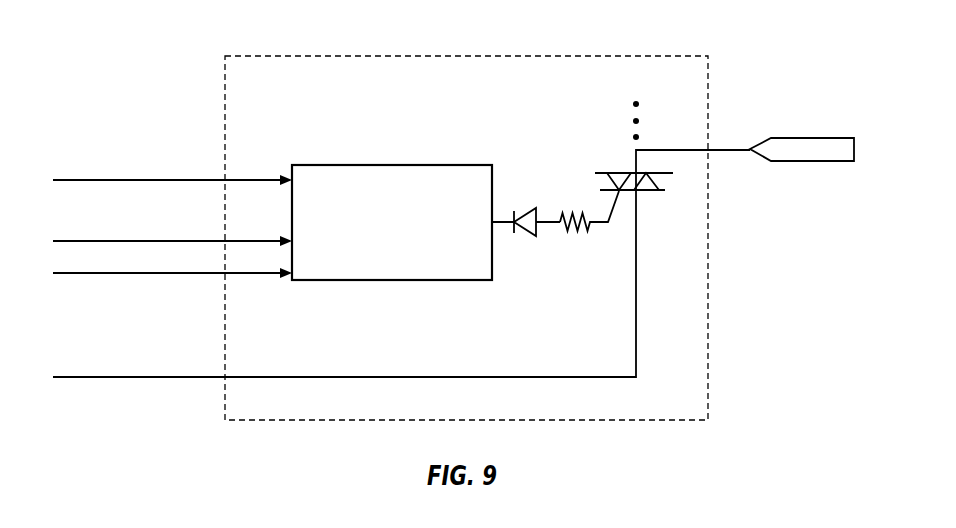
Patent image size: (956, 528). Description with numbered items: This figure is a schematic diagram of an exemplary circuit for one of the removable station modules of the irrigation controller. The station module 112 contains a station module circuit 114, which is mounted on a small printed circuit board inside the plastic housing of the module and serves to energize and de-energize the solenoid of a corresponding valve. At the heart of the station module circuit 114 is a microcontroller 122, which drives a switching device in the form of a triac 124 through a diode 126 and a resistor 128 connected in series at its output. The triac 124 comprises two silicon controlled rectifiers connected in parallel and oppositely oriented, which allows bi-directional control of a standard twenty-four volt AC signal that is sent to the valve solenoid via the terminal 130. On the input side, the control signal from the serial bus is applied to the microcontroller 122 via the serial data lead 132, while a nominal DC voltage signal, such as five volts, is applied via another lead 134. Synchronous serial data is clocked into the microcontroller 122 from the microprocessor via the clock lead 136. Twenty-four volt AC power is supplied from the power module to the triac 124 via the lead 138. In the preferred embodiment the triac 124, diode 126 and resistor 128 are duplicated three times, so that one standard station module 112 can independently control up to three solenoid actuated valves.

The station module 112 is at (258, 55).
The station module circuit 114 is at (349, 146).
The microcontroller 122 is at (345, 281).
The triac 124 is at (645, 192).
The diode 126 is at (523, 237).
The resistor 128 is at (573, 212).
The terminal 130 is at (800, 138).
The serial data lead 132 is at (202, 239).
The DC voltage lead 134 is at (209, 178).
The clock lead 136 is at (202, 276).
The AC power lead 138 is at (205, 376).